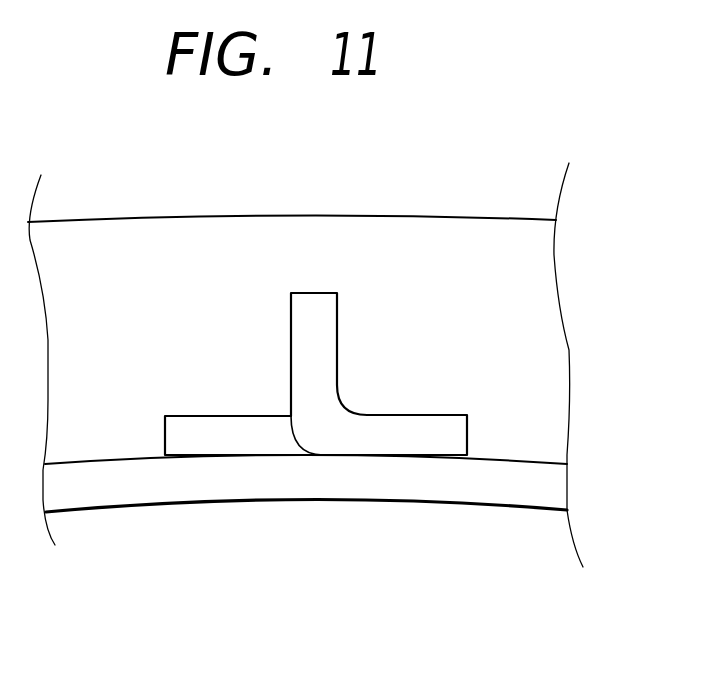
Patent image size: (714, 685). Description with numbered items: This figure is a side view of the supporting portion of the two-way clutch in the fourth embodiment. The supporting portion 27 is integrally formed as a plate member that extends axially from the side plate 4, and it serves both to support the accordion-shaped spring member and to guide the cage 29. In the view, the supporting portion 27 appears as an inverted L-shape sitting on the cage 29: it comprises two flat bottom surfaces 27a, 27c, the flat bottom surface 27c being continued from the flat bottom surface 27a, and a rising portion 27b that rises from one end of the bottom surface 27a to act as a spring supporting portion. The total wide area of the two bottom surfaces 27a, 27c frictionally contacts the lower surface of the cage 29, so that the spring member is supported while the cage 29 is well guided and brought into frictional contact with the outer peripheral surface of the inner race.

The side plate 4 is at (505, 286).
The supporting portion 27 is at (300, 390).
The flat bottom surface 27a is at (425, 438).
The rising portion 27b is at (313, 313).
The flat bottom surface 27c is at (168, 440).
The cage 29 is at (305, 473).